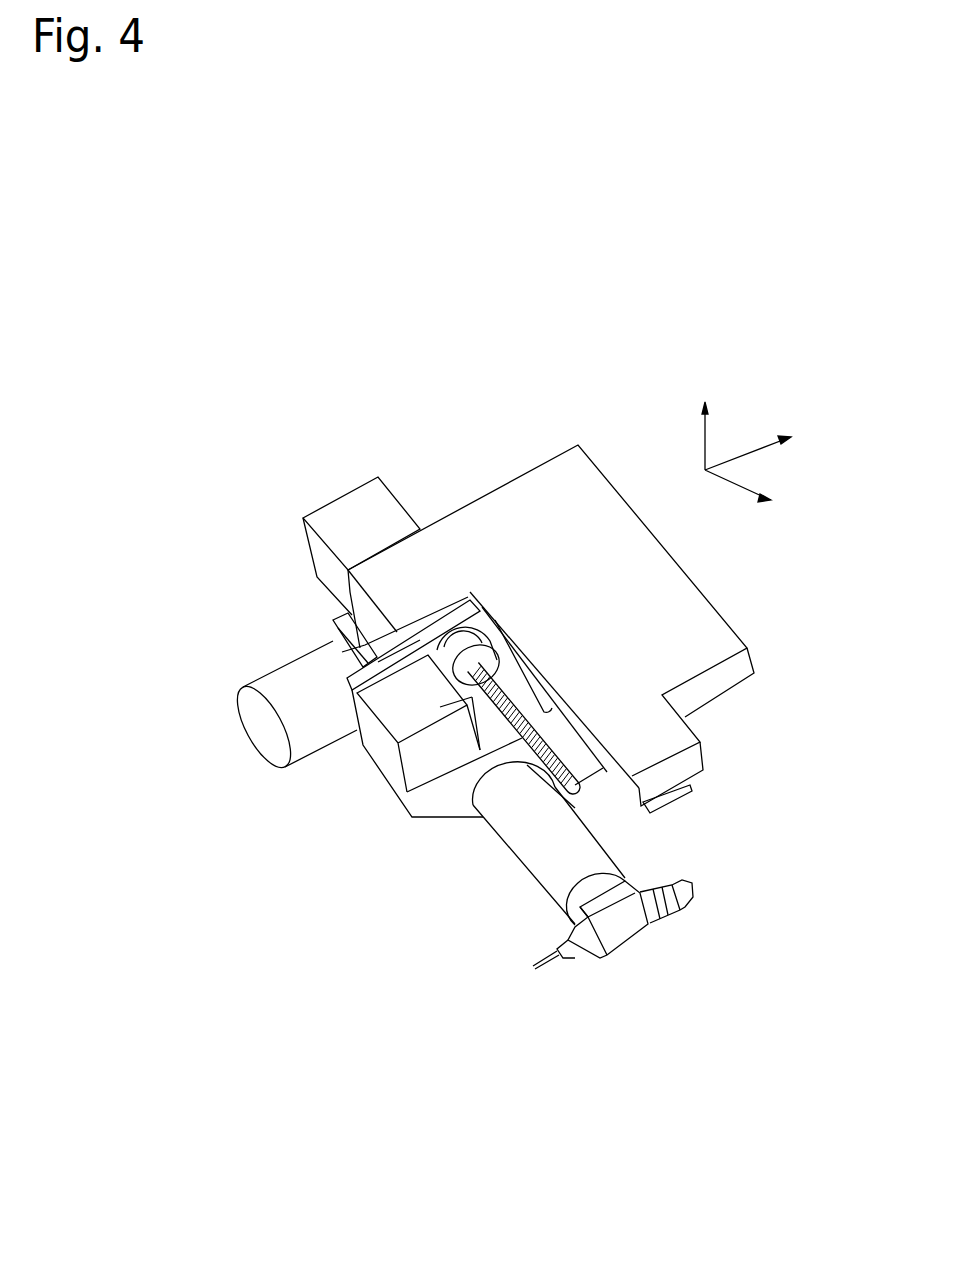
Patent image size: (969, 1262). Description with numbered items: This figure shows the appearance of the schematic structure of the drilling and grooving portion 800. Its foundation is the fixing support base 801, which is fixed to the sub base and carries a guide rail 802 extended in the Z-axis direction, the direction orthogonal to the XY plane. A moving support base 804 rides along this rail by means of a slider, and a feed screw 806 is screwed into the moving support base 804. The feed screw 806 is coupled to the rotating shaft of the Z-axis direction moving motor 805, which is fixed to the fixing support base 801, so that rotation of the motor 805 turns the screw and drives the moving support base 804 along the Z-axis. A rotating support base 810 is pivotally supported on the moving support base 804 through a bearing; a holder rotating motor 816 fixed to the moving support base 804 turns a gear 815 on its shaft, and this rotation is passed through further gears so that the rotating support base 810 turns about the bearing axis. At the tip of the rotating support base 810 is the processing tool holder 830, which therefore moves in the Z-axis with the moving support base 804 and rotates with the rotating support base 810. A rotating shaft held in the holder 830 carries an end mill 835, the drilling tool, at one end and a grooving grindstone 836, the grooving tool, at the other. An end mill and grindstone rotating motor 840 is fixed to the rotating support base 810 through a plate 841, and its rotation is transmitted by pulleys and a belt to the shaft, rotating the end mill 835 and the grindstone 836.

The drilling and grooving portion 800 is at (531, 366).
The fixing support base 801 is at (700, 612).
The guide rail 802 is at (690, 793).
The moving support base 804 is at (446, 790).
The Z-axis direction moving motor 805 is at (351, 509).
The feed screw 806 is at (607, 772).
The rotating support base 810 is at (545, 850).
The gear 815 is at (342, 652).
The holder rotating motor 816 is at (402, 712).
The processing tool holder 830 is at (646, 988).
The end mill 835 is at (550, 968).
The grooving grindstone 836 is at (677, 912).
The end mill and grindstone rotating motor 840 is at (272, 734).
The plate 841 is at (348, 612).